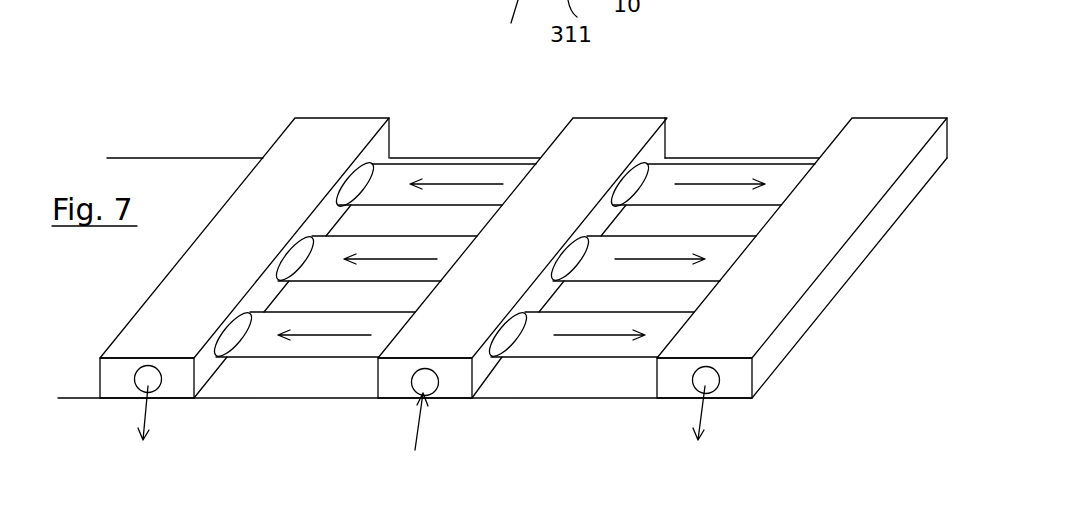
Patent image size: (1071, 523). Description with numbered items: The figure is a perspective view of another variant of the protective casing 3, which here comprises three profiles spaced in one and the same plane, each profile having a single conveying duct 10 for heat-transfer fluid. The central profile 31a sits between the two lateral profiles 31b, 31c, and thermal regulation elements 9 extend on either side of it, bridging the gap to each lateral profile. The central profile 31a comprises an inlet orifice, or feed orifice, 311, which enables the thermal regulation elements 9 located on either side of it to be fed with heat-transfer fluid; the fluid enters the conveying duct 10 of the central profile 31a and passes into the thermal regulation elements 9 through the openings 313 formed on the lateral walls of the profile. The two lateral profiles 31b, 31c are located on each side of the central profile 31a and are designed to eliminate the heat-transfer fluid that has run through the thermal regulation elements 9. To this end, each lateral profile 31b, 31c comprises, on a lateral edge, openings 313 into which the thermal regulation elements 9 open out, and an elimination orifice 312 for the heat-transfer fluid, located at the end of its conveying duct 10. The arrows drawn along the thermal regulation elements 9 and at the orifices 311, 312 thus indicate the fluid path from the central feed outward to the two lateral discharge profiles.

The protective casing 3 is at (229, 102).
The thermal regulation elements 9 is at (343, 312).
The conveying duct 10 is at (137, 383).
The central profile 31a is at (595, 160).
The lateral profile 31b is at (325, 155).
The lateral profile 31c is at (852, 175).
The inlet orifice 311 is at (435, 384).
The elimination orifice 312 is at (162, 383).
The openings 313 is at (233, 337).